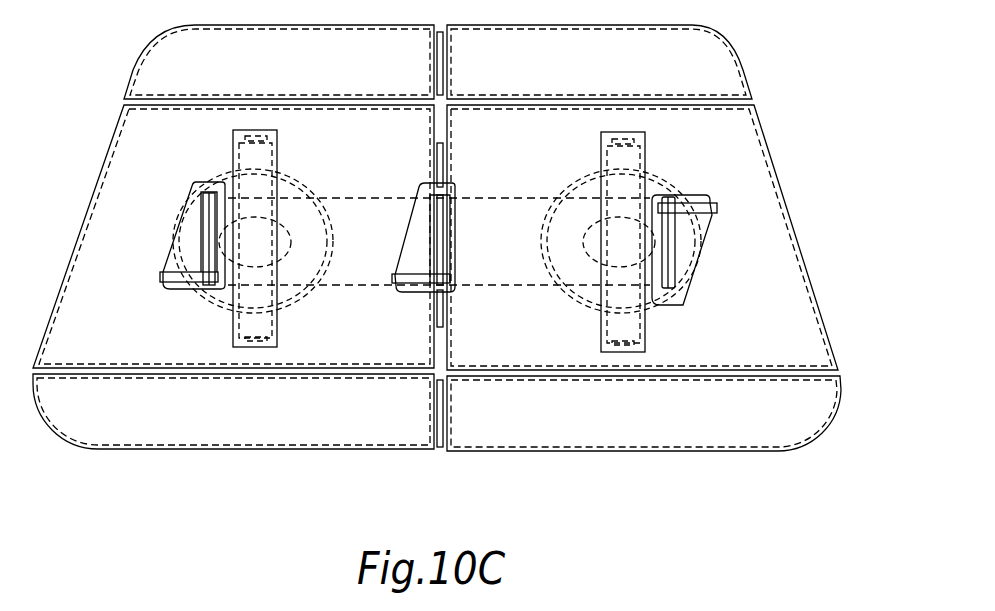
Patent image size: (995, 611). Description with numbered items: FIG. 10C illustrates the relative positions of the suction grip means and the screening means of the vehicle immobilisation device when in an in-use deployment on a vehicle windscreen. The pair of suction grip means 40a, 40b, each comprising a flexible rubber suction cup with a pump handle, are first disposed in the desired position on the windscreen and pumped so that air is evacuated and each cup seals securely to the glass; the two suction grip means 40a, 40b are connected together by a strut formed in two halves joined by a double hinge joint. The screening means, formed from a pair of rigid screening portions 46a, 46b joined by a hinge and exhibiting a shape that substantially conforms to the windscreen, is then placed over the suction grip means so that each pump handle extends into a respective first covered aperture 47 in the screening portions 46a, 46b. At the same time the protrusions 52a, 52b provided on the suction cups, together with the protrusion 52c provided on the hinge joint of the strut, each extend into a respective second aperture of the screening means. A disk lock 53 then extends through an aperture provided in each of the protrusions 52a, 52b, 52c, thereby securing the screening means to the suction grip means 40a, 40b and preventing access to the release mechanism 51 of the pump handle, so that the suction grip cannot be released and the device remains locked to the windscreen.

The suction grip means 40a is at (312, 190).
The suction grip means 40b is at (573, 182).
The rigid screening portion 46a is at (220, 452).
The rigid screening portion 46b is at (625, 452).
The first covered aperture 47 is at (258, 338).
The release mechanism 51 is at (248, 338).
The protrusion 52a is at (206, 216).
The protrusion 52b is at (672, 198).
The protrusion 52c is at (443, 206).
The disk lock 53 is at (172, 258).